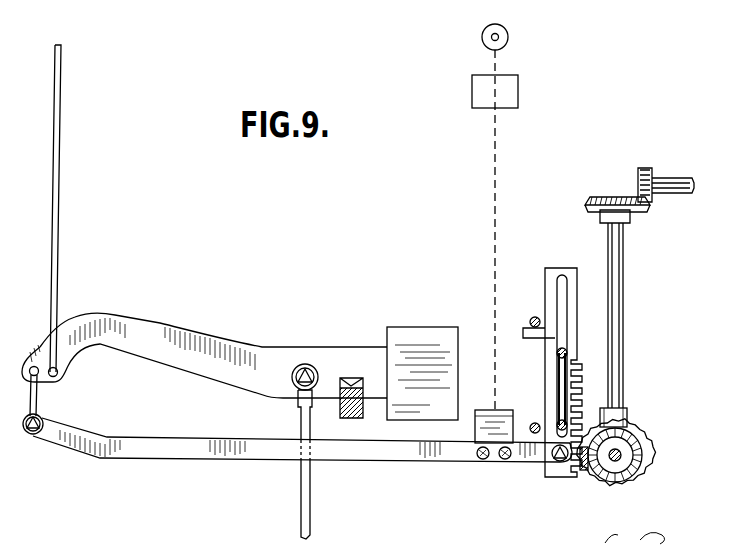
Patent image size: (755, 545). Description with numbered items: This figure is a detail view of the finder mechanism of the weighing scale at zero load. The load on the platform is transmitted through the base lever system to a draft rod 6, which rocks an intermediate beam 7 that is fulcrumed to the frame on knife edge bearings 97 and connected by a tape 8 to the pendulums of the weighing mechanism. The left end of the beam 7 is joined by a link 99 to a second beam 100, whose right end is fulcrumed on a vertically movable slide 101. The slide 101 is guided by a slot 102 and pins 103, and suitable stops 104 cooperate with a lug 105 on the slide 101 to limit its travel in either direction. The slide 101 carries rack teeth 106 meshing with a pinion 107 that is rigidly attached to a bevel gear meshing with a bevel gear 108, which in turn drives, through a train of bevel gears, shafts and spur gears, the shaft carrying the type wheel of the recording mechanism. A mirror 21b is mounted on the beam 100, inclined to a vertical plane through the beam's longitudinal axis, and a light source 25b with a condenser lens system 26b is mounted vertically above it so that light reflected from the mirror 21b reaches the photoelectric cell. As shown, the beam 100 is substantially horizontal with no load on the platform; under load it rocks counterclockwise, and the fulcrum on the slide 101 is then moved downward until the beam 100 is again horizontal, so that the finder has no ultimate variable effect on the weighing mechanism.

The draft rod 6 is at (307, 505).
The intermediate beam 7 is at (205, 343).
The tape 8 is at (55, 255).
The mirror 21b is at (480, 418).
The light source 25b is at (508, 41).
The condenser lens system 26b is at (510, 96).
The knife edge bearings 97 is at (355, 372).
The link 99 is at (36, 401).
The second beam 100 is at (130, 440).
The slide 101 is at (565, 268).
The slot 102 is at (557, 288).
The pins 103 is at (562, 420).
The stops 104 is at (532, 320).
The lug 105 is at (525, 330).
The rack teeth 106 is at (585, 467).
The pinion 107 is at (618, 478).
The bevel gear 108 is at (628, 420).